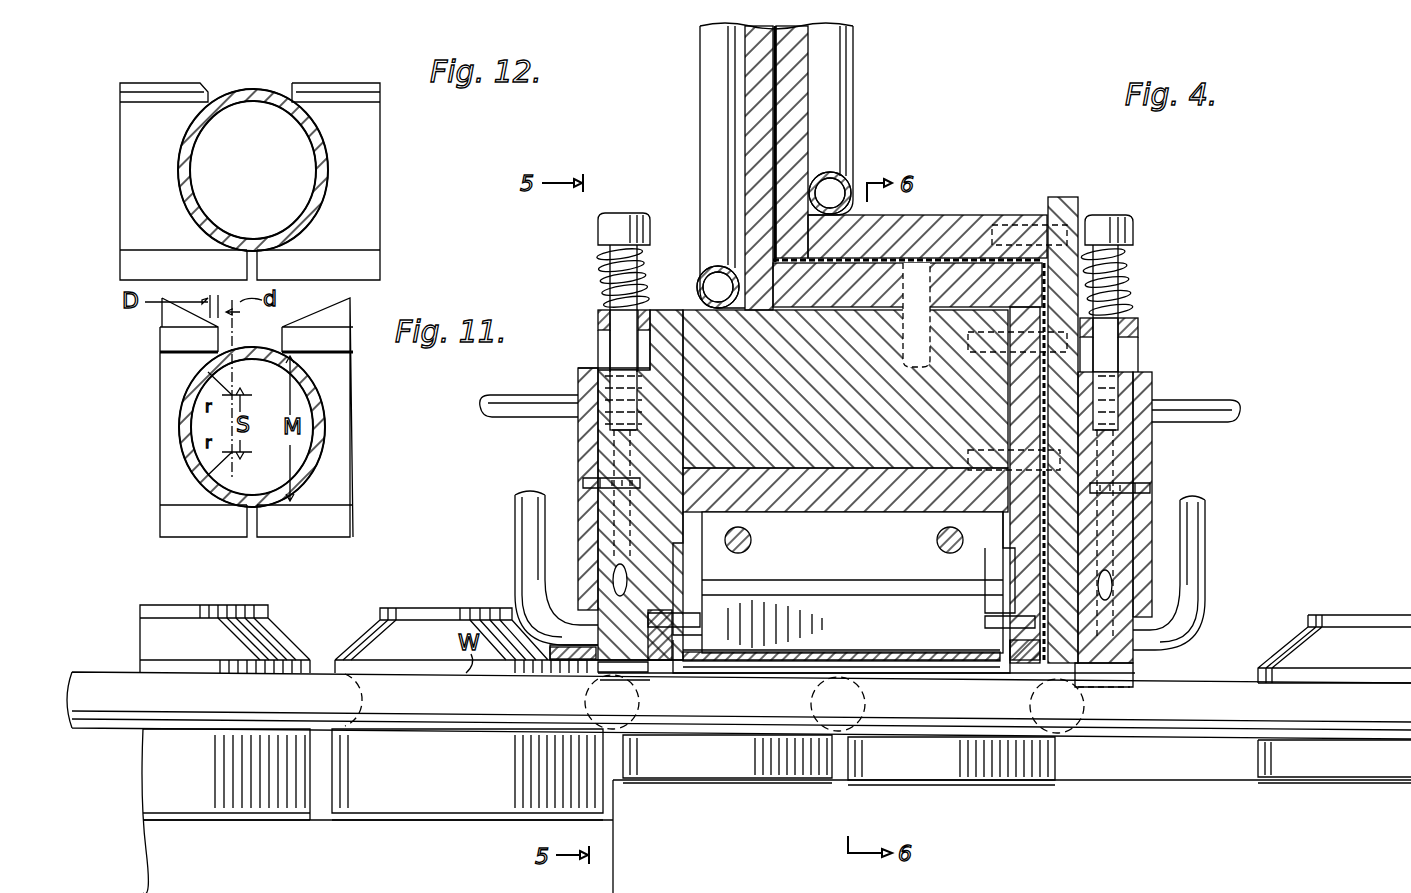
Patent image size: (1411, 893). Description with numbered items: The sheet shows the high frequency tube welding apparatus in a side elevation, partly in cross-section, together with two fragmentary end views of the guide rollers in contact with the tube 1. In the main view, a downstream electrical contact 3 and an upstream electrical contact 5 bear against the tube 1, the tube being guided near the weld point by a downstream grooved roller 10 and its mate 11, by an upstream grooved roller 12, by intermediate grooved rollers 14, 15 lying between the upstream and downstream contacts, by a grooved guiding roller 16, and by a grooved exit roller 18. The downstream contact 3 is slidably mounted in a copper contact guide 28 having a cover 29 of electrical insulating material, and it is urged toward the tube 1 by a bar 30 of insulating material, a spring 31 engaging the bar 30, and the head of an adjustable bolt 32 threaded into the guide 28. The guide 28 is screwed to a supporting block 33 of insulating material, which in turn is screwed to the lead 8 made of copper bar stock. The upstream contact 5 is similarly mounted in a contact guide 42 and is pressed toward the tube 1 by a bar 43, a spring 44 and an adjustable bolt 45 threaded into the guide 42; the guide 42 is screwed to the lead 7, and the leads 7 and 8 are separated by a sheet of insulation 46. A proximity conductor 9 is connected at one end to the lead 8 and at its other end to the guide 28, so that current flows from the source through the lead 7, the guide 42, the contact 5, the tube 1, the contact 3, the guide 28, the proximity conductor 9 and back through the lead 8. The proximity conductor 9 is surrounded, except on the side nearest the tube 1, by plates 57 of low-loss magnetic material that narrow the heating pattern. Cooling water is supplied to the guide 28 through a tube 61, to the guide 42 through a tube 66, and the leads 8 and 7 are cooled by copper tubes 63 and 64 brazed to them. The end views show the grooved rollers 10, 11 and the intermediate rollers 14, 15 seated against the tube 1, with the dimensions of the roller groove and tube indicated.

In FIG. 12, the tube 1 is at (312, 173).
In FIG. 11, the tube 1 is at (318, 420).
In FIG. 4, the tube 1 is at (118, 668).
In FIG. 4, the downstream electrical contact 3 is at (640, 678).
In FIG. 4, the upstream electrical contact 5 is at (1133, 660).
In FIG. 4, the lead 7 is at (795, 72).
In FIG. 4, the lead 8 is at (758, 72).
In FIG. 4, the proximity conductor 9 is at (820, 680).
In FIG. 11, the downstream grooved roller 10 is at (166, 343).
In FIG. 4, the downstream grooved roller 10 is at (425, 607).
In FIG. 11, the downstream grooved roller 11 is at (340, 342).
In FIG. 4, the upstream grooved roller 12 is at (890, 782).
In FIG. 12, the intermediate grooved roller 14 is at (136, 88).
In FIG. 4, the intermediate grooved roller 14 is at (668, 780).
In FIG. 12, the intermediate grooved roller 15 is at (355, 88).
In FIG. 4, the grooved guiding roller 16 is at (1272, 780).
In FIG. 4, the grooved exit roller 18 is at (232, 606).
In FIG. 4, the contact guide 28 is at (662, 310).
In FIG. 4, the cover 29 is at (580, 368).
In FIG. 4, the bar 30 is at (602, 318).
In FIG. 4, the spring 31 is at (612, 260).
In FIG. 4, the adjustable bolt 32 is at (605, 226).
In FIG. 4, the supporting block 33 is at (848, 378).
In FIG. 4, the contact guide 42 is at (1140, 372).
In FIG. 4, the bar 43 is at (1140, 322).
In FIG. 4, the spring 44 is at (1125, 276).
In FIG. 4, the adjustable bolt 45 is at (1135, 228).
In FIG. 4, the sheet of insulation 46 is at (880, 256).
In FIG. 4, the plates 57 is at (852, 636).
In FIG. 4, the tube 61 is at (526, 415).
In FIG. 4, the copper tube 63 is at (708, 118).
In FIG. 4, the copper tube 64 is at (840, 103).
In FIG. 4, the tube 66 is at (1228, 398).